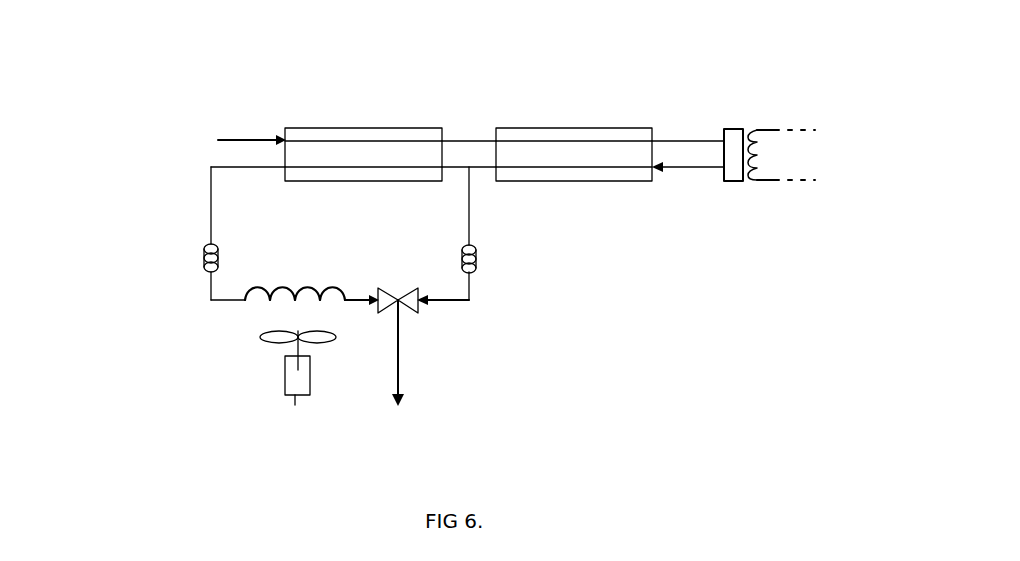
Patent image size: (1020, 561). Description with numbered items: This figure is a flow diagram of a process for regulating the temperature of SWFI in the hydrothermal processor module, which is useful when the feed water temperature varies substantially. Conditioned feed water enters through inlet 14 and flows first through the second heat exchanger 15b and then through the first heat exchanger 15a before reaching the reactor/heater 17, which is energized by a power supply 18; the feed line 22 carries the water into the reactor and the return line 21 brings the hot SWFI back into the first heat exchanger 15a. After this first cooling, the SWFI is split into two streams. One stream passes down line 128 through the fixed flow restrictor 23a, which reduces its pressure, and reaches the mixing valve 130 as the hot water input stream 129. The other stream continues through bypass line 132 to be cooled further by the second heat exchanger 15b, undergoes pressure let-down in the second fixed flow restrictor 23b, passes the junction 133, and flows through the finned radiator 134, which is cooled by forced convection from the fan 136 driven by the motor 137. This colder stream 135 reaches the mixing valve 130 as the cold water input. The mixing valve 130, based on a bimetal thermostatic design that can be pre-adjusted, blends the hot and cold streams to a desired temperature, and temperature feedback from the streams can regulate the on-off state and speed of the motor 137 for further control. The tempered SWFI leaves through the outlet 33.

The conditioned feed water inlet 14 is at (259, 138).
The first heat exchanger 15a is at (501, 126).
The second heat exchanger 15b is at (383, 126).
The reactor 17 is at (722, 133).
The power supply 18 is at (765, 128).
The return line from reactor 21 is at (695, 168).
The feed line to reactor 22 is at (482, 166).
The fixed flow restrictor 23a is at (473, 261).
The second fixed flow restrictor 23b is at (218, 263).
The SWFI outlet 33 is at (398, 367).
The product line from heat exchanger 128 is at (470, 217).
The hot water input stream 129 is at (470, 292).
The mixing valve 130 is at (415, 312).
The bypass line 132 is at (211, 195).
The bypass line junction 133 is at (211, 291).
The finned radiator 134 is at (253, 301).
The colder stream 135 is at (375, 298).
The fan 136 is at (273, 343).
The motor 137 is at (295, 405).